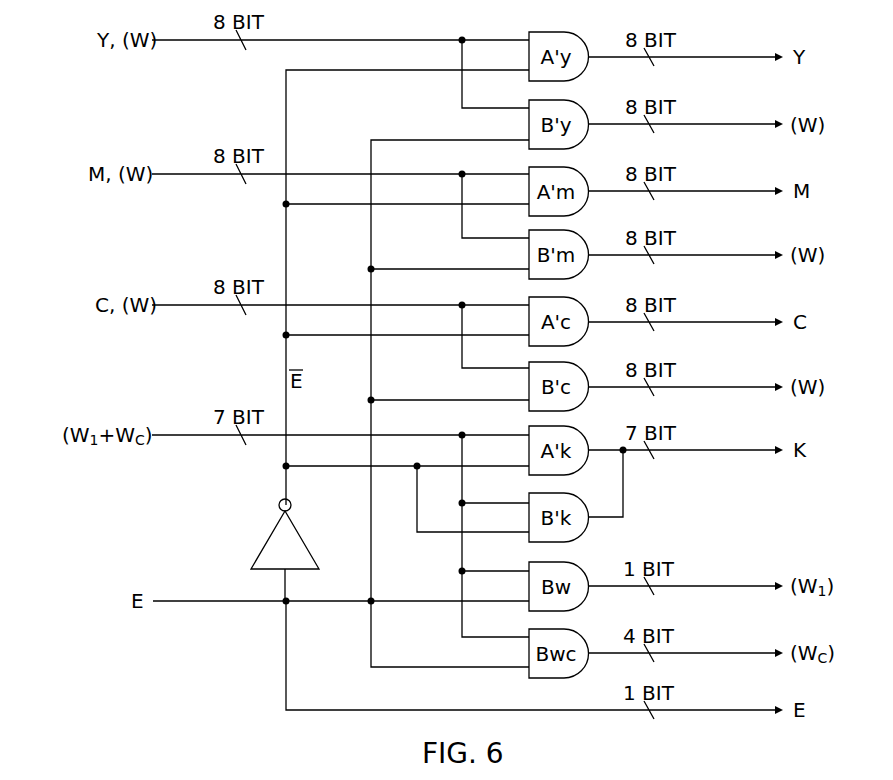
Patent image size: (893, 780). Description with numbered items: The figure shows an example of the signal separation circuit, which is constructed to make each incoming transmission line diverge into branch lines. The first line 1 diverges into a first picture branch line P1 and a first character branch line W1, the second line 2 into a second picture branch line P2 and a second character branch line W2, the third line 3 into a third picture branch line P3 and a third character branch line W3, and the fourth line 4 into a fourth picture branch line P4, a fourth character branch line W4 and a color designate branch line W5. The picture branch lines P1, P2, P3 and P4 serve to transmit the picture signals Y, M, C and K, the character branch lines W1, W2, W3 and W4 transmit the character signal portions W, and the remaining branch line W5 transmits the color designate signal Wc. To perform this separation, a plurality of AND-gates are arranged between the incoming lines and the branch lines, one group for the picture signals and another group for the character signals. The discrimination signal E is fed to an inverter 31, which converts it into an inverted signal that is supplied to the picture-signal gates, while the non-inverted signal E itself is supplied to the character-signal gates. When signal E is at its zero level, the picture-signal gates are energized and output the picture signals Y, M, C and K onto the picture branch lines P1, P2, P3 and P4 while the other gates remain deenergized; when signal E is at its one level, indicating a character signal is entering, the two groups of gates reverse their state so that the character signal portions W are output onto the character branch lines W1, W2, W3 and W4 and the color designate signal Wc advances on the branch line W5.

The inverter 31 is at (273, 546).
The line l1 1 is at (340, 30).
The line l2 2 is at (340, 164).
The line l3 3 is at (340, 295).
The line l4 4 is at (340, 425).
The branch line lp1 P1 is at (686, 46).
The branch line lw1 W1 is at (686, 113).
The branch line lp2 P2 is at (686, 180).
The branch line lw2 W2 is at (686, 244).
The branch line lp3 P3 is at (686, 311).
The branch line lw3 W3 is at (686, 376).
The branch line lp4 P4 is at (686, 468).
The branch line lw4 W4 is at (686, 575).
The branch line lw5 W5 is at (686, 642).